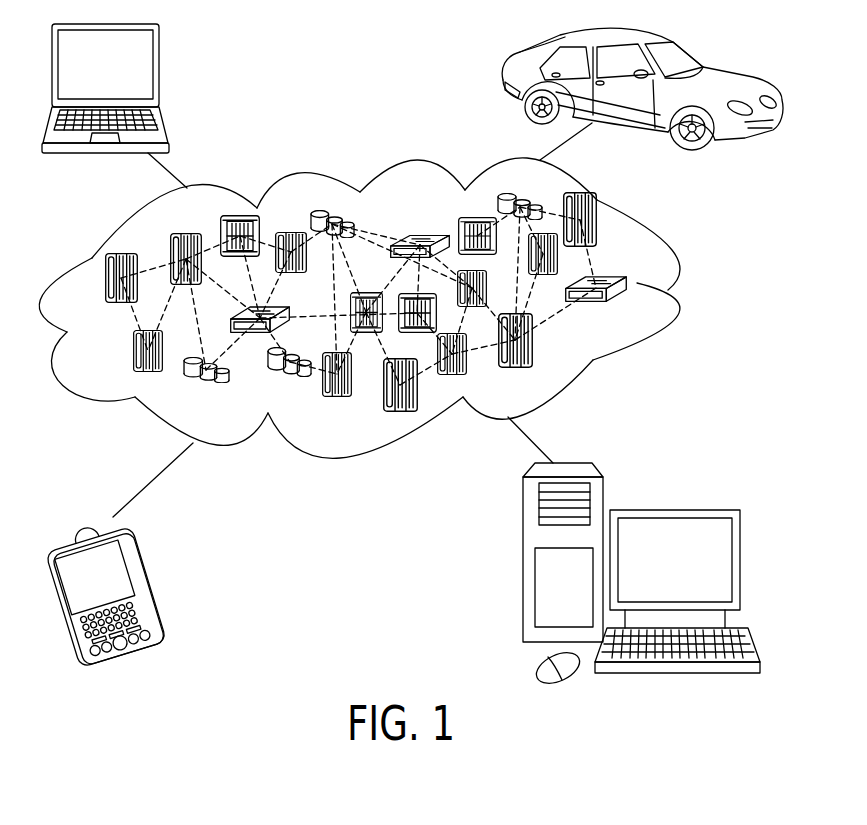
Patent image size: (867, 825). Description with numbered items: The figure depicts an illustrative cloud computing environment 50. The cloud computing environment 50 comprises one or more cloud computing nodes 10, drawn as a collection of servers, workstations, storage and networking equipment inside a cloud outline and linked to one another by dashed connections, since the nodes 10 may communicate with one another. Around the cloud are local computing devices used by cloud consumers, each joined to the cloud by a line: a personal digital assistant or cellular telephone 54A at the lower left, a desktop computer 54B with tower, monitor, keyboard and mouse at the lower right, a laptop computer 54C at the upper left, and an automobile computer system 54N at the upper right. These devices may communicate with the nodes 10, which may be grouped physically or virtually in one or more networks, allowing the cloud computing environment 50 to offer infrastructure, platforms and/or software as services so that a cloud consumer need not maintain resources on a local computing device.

The cloud computing nodes 10 is at (684, 299).
The cloud computing environment 50 is at (673, 283).
The personal digital assistant or cellular telephone 54A is at (152, 580).
The desktop computer 54B is at (673, 510).
The laptop computer 54C is at (160, 76).
The automobile computer system 54N is at (500, 88).